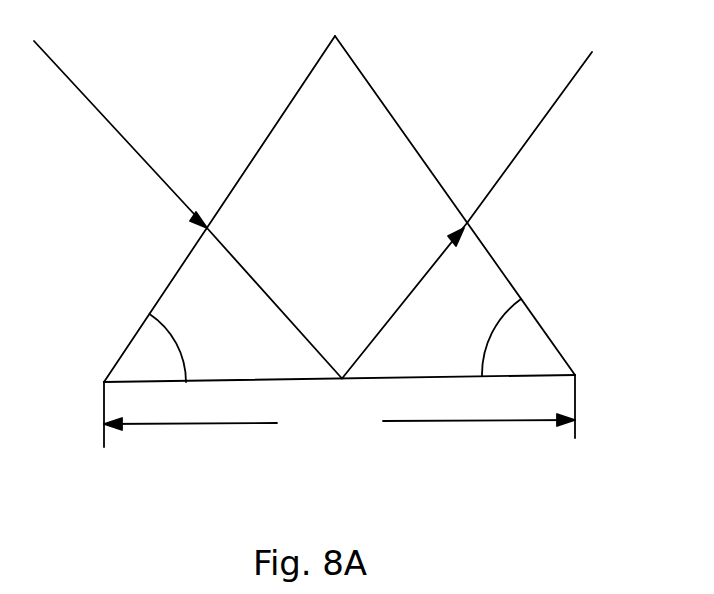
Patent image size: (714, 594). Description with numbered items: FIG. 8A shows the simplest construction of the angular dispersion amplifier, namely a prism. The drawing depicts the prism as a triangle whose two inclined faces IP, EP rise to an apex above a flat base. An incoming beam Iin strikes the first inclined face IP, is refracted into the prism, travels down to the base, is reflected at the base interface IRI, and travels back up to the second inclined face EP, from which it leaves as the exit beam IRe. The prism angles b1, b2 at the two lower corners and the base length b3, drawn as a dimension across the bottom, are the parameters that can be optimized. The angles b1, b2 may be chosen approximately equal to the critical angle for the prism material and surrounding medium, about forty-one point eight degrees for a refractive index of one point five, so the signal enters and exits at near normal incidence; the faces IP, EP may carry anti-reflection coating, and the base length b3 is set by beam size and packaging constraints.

The incident light beam Iin is at (120, 130).
The reflected/exit light beam IRe is at (520, 134).
The incident plane of prism IP is at (219, 209).
The exit plane of prism EP is at (455, 205).
The internal reflection interface (prism base) IRI is at (511, 374).
The prism angle b1 is at (191, 348).
The prism angle b2 is at (483, 337).
The base length b3 is at (339, 411).